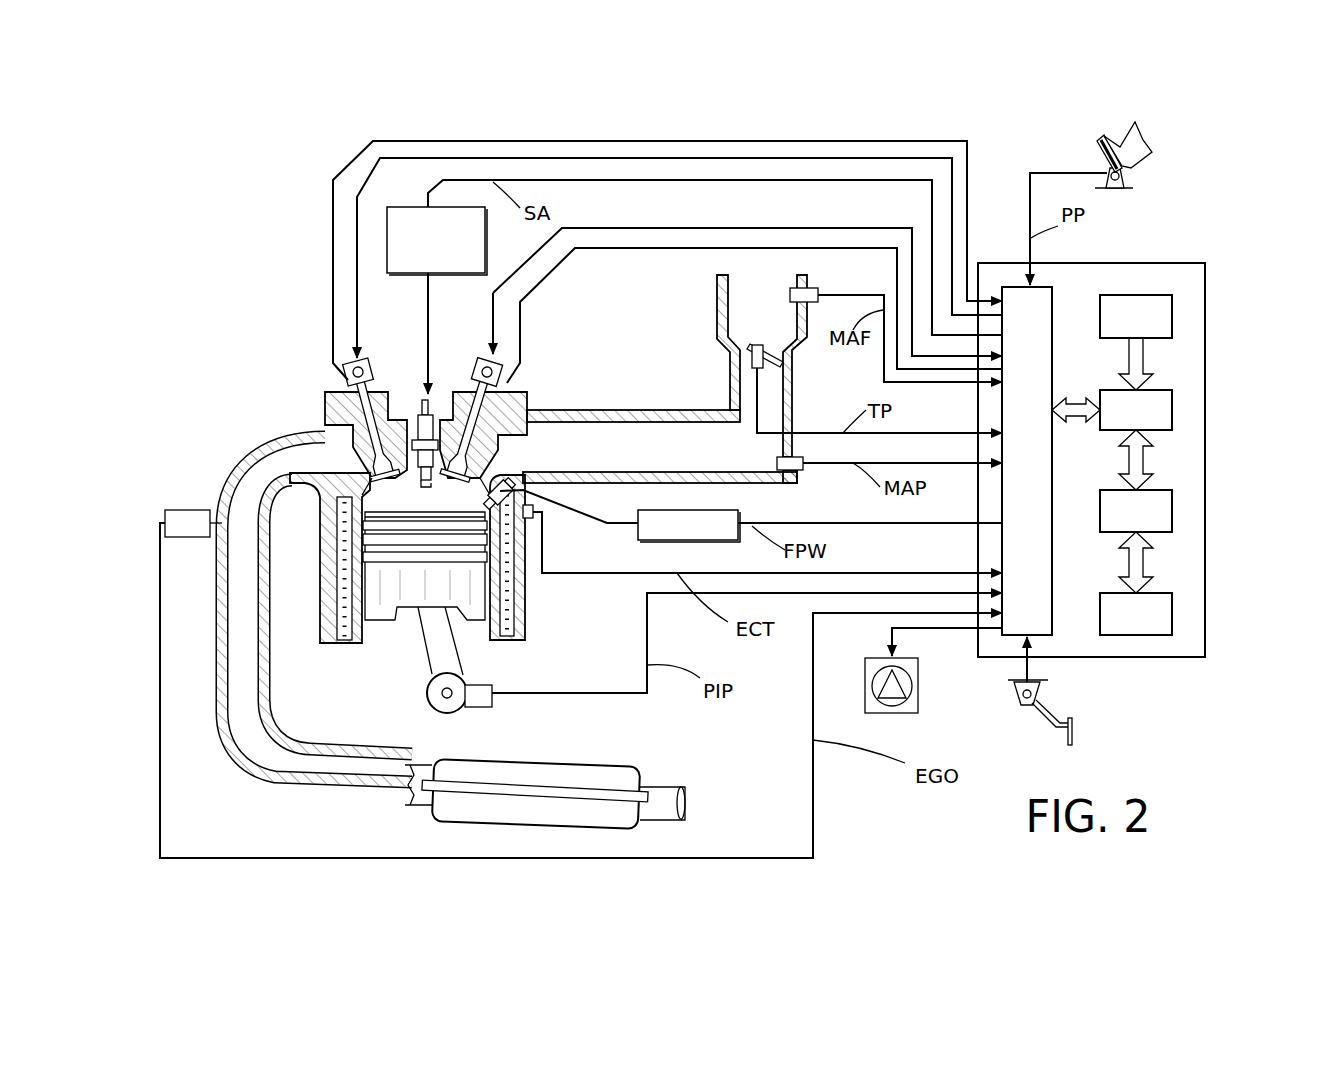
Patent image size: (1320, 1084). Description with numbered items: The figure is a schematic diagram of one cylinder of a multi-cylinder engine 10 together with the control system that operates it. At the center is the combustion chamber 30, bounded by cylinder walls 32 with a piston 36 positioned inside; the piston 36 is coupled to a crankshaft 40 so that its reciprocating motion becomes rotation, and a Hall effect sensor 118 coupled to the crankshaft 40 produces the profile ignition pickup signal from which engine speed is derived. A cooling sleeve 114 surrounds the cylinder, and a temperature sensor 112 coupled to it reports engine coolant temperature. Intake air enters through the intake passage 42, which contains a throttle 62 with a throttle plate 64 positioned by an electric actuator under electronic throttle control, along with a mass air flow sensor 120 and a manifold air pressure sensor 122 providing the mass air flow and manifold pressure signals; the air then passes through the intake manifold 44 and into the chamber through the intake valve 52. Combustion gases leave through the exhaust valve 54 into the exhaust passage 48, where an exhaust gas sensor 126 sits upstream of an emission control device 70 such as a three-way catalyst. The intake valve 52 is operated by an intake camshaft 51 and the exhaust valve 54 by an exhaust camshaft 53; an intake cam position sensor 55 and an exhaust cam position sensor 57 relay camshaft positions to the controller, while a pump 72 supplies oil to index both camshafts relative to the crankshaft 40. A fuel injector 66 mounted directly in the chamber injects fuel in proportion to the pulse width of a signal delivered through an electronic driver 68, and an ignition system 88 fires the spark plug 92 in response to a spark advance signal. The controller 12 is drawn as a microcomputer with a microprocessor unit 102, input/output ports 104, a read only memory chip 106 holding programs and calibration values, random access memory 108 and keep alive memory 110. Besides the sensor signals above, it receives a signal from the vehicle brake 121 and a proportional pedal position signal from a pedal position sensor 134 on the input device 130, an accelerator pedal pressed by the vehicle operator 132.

The engine 10 is at (262, 350).
The controller 12 is at (1195, 266).
The combustion chamber 30 is at (423, 495).
The cylinder walls 32 is at (355, 623).
The piston 36 is at (397, 585).
The crankshaft 40 is at (433, 706).
The intake passage 42 is at (748, 322).
The intake manifold 44 is at (683, 459).
The exhaust passage 48 is at (281, 467).
The intake camshaft 51 is at (484, 362).
The intake valve 52 is at (470, 458).
The exhaust camshaft 53 is at (364, 362).
The exhaust valve 54 is at (360, 456).
The intake cam position sensor 55 is at (510, 384).
The exhaust cam position sensor 57 is at (343, 378).
The throttle 62 is at (782, 355).
The throttle plate 64 is at (745, 349).
The fuel injector 66 is at (548, 493).
The electronic driver 68 is at (665, 541).
The emission control device 70 is at (600, 766).
The pump 72 is at (905, 632).
The ignition system 88 is at (388, 207).
The spark plug 92 is at (438, 418).
The microprocessor unit 102 is at (1172, 410).
The input/output ports 104 is at (1055, 297).
The read only memory chip 106 is at (1172, 316).
The random access memory 108 is at (1172, 511).
The keep alive memory 110 is at (1172, 615).
The temperature sensor 112 is at (532, 512).
The cooling sleeve 114 is at (508, 596).
The Hall effect sensor 118 is at (482, 710).
The mass air flow sensor 120 is at (814, 290).
The vehicle brake 121 is at (1024, 700).
The manifold air pressure sensor 122 is at (800, 470).
The exhaust gas sensor 126 is at (165, 516).
The input device 130 is at (1096, 150).
The vehicle operator 132 is at (1142, 133).
The pedal position sensor 134 is at (1127, 177).